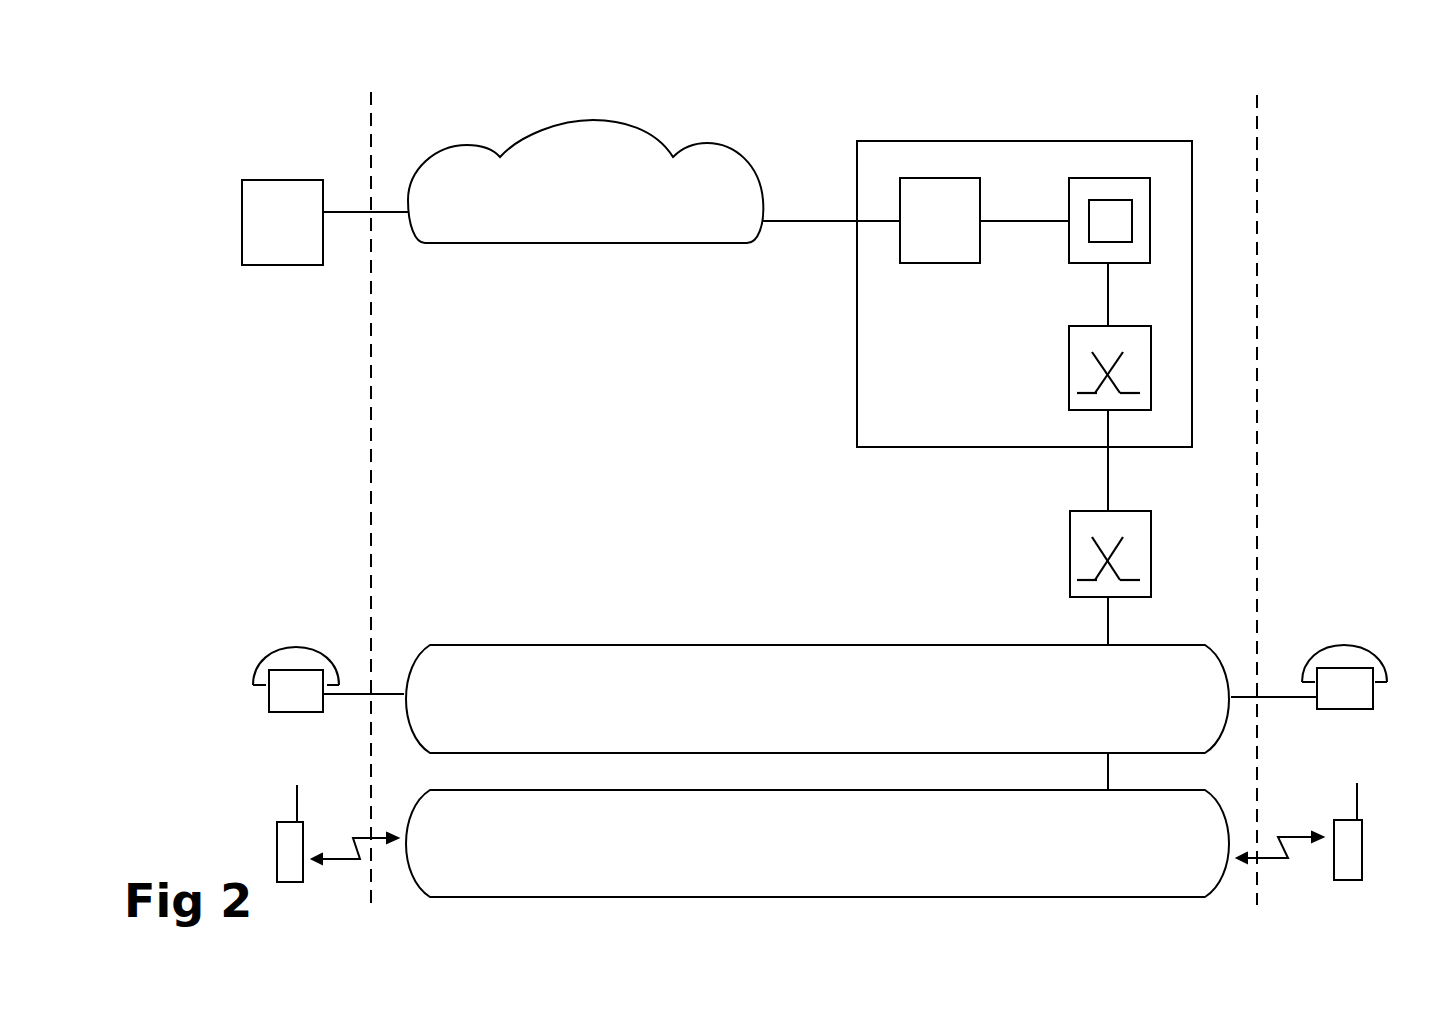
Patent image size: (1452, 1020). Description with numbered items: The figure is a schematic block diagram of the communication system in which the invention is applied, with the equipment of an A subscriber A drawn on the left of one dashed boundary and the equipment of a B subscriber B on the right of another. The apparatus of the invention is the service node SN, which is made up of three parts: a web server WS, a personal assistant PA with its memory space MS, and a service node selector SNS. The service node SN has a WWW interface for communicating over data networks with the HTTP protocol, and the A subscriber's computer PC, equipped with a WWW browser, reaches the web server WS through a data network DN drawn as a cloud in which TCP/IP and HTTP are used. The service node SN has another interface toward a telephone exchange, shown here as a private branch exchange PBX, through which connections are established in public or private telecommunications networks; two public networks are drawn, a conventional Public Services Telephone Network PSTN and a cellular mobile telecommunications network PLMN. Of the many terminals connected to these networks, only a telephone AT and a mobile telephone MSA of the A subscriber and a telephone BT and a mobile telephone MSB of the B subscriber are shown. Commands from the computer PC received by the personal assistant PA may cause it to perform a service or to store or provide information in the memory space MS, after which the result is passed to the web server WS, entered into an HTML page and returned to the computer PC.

The A subscriber A is at (344, 486).
The B subscriber B is at (1281, 486).
The computer PC is at (242, 234).
The data network DN is at (533, 132).
The service node SN is at (873, 141).
The web server WS is at (946, 178).
The memory space MS is at (1093, 200).
The personal assistant PA is at (1108, 178).
The service node selector SNS is at (1151, 374).
The private branch exchange PBX is at (1151, 555).
The Public Services Telephone Network PSTN is at (650, 645).
The cellular mobile telecommunications network PLMN is at (790, 790).
The telephone AT is at (269, 708).
The telephone BT is at (1373, 698).
The mobile telephone MSA is at (277, 857).
The mobile telephone MSB is at (1362, 855).